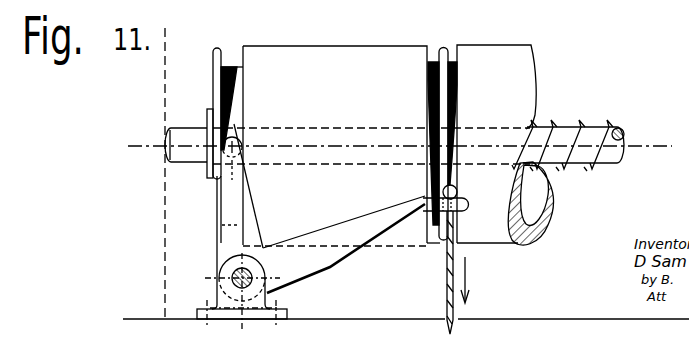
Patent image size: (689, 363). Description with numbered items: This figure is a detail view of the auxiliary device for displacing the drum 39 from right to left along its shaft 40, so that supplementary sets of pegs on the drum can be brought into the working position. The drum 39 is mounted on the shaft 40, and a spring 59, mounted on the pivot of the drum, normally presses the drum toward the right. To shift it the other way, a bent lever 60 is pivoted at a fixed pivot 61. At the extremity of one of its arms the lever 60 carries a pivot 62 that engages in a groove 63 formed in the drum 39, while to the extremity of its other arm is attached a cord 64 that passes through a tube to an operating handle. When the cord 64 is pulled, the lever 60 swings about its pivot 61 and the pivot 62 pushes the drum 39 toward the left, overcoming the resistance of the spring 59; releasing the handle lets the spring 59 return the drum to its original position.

The drum 39 is at (380, 46).
The shaft 40 is at (182, 146).
The spring 59 is at (562, 166).
The bent lever 60 is at (315, 252).
The pivot 61 is at (240, 276).
The pivot 62 is at (226, 143).
The groove 63 is at (232, 63).
The cord 64 is at (448, 292).